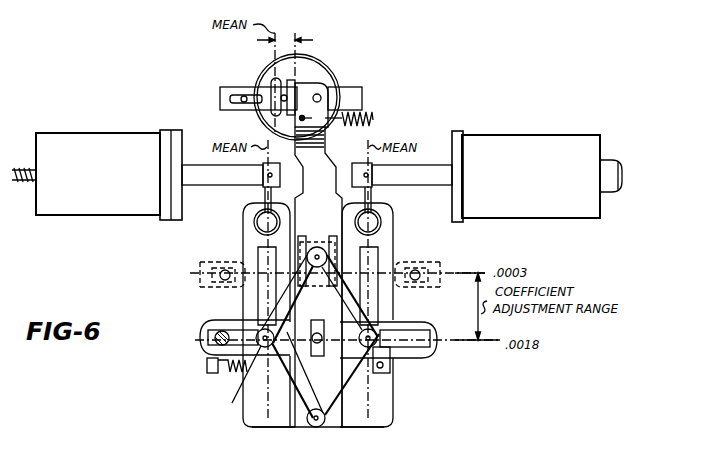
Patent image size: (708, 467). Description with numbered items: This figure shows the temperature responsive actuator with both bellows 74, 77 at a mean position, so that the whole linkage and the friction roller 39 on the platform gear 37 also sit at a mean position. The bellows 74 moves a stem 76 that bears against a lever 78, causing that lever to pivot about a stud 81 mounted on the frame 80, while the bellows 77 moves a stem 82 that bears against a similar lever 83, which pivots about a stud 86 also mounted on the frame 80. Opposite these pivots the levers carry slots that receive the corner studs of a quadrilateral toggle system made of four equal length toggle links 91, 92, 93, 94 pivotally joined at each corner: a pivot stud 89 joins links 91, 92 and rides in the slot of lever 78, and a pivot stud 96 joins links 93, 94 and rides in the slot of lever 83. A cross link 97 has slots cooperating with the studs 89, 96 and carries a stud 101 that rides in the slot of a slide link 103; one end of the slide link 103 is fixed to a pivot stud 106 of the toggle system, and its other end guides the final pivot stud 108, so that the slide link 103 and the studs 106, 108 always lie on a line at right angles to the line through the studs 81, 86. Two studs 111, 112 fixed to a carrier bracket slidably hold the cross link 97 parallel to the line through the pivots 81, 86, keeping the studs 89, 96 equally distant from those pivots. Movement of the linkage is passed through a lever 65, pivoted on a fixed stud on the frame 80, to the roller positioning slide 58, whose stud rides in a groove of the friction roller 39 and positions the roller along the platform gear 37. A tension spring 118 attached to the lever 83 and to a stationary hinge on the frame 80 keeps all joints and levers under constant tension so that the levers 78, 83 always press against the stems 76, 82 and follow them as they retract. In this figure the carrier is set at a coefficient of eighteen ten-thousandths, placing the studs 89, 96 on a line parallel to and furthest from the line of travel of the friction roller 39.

The platform gear 37 is at (320, 72).
The friction roller 39 is at (275, 84).
The roller positioning slide 58 is at (353, 86).
The lever 65 is at (325, 165).
The bellows 74 is at (66, 212).
The stem 76 is at (206, 180).
The bellows 77 is at (548, 212).
The stem 82 is at (410, 179).
The lever 78 is at (245, 300).
The lever 83 is at (394, 251).
The frame 80 is at (393, 418).
The stud 81 is at (256, 227).
The stud 86 is at (380, 226).
The pivot stud 108 is at (322, 246).
The toggle link 92 is at (300, 300).
The toggle link 93 is at (356, 313).
The cross link 97 is at (205, 330).
The stud 111 is at (430, 328).
The stud 112 is at (215, 341).
The tension spring 118 is at (240, 376).
The pivot stud 96 is at (391, 365).
The stud 101 is at (321, 354).
The pivot stud 106 is at (312, 428).
The toggle link 91 is at (286, 380).
The slide link 103 is at (316, 382).
The toggle link 94 is at (347, 385).
The pivot stud 89 is at (237, 383).